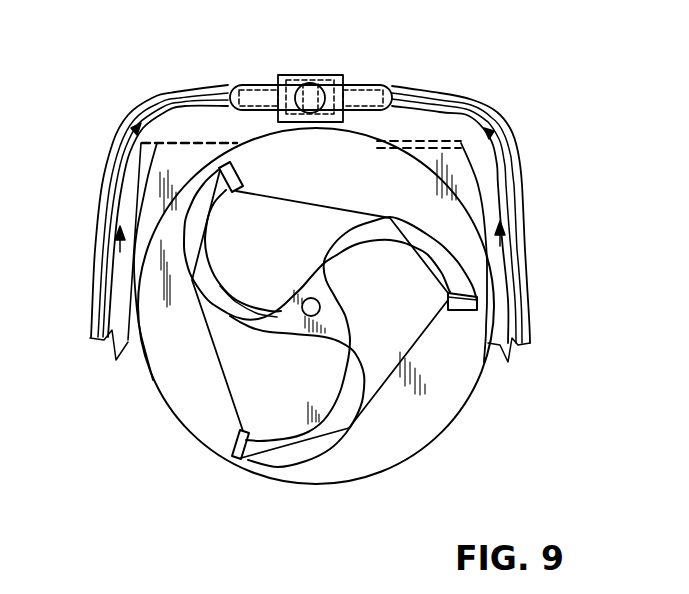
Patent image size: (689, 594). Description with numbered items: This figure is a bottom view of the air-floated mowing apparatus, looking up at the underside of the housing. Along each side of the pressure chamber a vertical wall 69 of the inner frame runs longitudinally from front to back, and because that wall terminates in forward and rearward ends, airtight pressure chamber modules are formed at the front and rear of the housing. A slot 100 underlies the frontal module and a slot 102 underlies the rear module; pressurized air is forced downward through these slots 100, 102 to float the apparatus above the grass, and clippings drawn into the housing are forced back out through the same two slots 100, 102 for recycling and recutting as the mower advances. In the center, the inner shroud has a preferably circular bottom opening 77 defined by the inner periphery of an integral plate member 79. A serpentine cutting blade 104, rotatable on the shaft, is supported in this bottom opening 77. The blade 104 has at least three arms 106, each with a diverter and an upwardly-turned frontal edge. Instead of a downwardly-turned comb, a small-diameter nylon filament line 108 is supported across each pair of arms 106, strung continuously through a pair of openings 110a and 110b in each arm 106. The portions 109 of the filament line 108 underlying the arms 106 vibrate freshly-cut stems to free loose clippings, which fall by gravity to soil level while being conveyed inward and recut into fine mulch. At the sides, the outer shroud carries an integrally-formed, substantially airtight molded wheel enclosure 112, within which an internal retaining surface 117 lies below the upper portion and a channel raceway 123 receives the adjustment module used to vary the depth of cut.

The vertical wall 69 is at (203, 145).
The bottom opening 77 is at (470, 378).
The plate member 79 is at (430, 141).
The slot 100 is at (108, 266).
The slot 102 is at (505, 262).
The serpentine cutting blade 104 is at (305, 299).
The arms 106 is at (343, 231).
The nylon filament line 108 is at (311, 204).
The portions of the filament line 109 is at (390, 217).
The opening 110a is at (390, 219).
The opening 110b is at (448, 297).
The wheel enclosure 112 is at (370, 84).
The internal retaining surface 117 is at (329, 80).
The channel raceway 123 is at (269, 92).